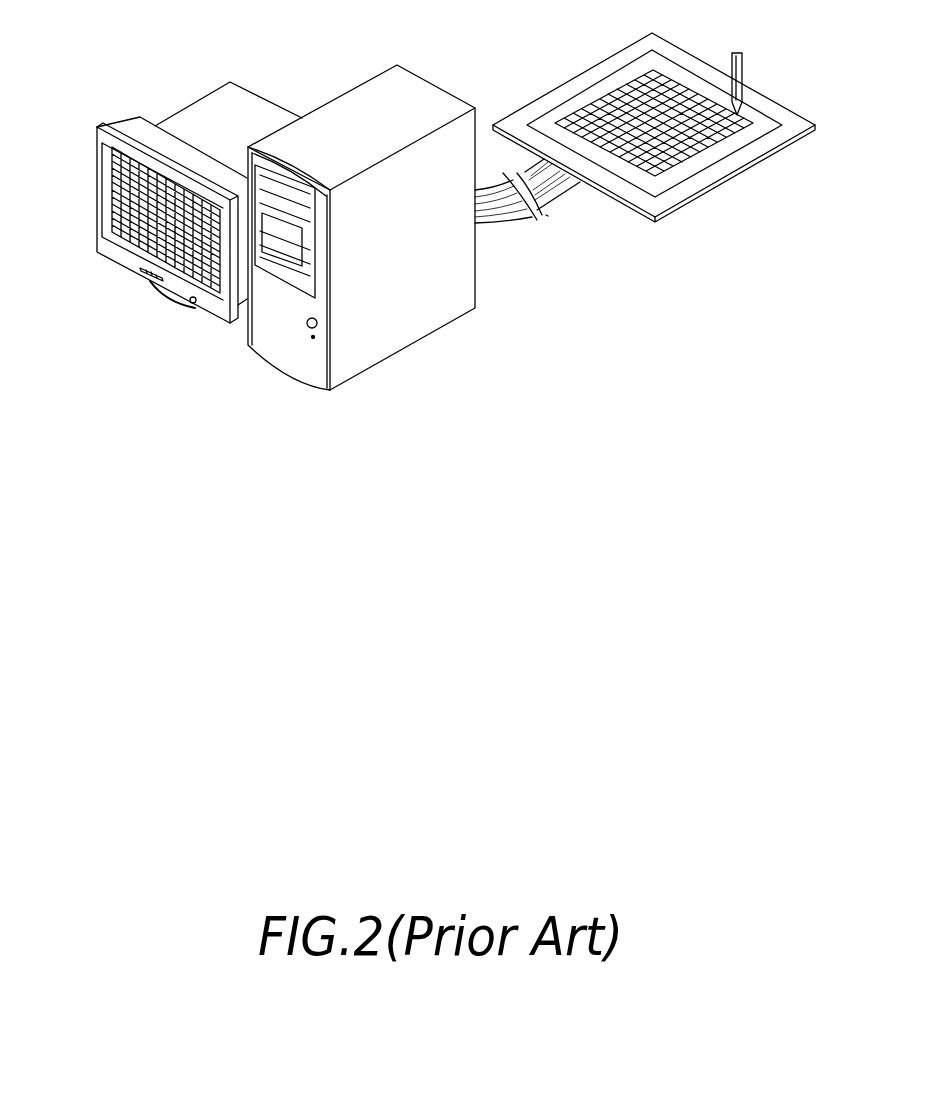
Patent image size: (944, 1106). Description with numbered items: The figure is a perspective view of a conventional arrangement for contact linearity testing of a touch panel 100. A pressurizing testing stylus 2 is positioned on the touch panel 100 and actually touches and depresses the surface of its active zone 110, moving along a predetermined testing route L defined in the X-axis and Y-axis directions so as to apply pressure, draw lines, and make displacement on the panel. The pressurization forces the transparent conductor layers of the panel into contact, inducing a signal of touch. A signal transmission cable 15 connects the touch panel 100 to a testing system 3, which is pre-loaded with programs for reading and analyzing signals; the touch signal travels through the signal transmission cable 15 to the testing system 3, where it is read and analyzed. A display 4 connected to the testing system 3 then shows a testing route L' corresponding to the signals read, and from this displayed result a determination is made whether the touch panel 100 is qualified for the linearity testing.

The pressurizing testing stylus 2 is at (742, 62).
The testing system 3 is at (383, 348).
The display 4 is at (166, 213).
The signal transmission cable 15 is at (560, 197).
The touch panel 100 is at (654, 124).
The active zone 110 is at (693, 167).
The predetermined testing route L is at (654, 89).
The testing route corresponding to the signals read L' is at (125, 220).